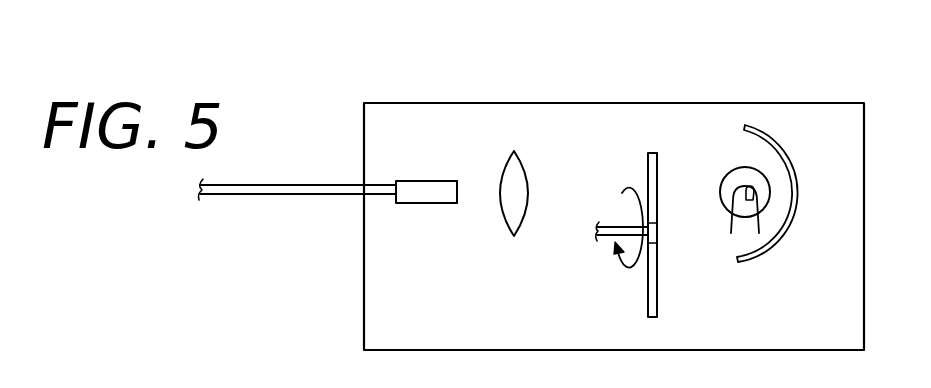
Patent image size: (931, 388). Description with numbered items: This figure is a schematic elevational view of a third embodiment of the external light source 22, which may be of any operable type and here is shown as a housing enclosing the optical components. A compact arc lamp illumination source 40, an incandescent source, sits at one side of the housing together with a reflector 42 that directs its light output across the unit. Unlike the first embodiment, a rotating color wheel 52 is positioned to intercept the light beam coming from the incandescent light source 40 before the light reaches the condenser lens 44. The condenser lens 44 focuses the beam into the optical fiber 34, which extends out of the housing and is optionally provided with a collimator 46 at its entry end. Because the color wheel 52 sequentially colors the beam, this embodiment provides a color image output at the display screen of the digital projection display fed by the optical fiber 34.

The external light source 22 is at (399, 95).
The optical fiber 34 is at (271, 203).
The collimator 46 is at (418, 204).
The condenser lens 44 is at (519, 164).
The rotating color wheel 52 is at (647, 160).
The compact arc lamp illumination source 40 is at (725, 180).
The reflector 42 is at (784, 151).